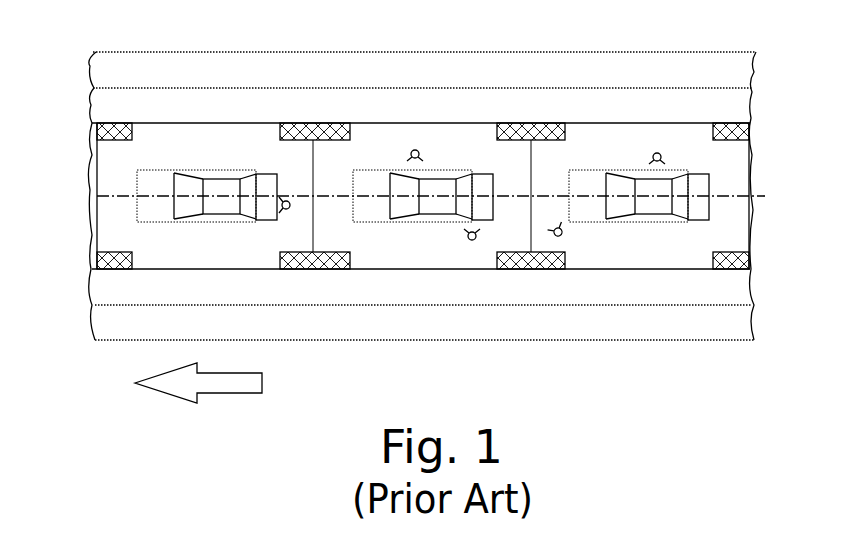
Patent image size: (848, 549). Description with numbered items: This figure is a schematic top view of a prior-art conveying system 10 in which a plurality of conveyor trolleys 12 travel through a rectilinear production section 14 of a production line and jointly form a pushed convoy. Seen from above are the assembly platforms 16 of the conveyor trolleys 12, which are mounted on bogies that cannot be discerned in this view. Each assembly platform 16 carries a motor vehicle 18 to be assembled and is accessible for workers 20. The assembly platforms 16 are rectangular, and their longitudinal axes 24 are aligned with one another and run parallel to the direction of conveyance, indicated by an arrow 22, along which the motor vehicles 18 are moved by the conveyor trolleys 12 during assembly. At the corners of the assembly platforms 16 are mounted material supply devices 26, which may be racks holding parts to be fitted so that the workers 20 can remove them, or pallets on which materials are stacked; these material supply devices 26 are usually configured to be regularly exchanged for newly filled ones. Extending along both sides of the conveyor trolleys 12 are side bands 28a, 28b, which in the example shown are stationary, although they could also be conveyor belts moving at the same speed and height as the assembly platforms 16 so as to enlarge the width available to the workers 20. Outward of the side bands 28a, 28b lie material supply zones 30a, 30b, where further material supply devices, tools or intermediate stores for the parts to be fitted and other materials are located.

The conveying system 10 is at (128, 430).
The conveyor trolley 12 is at (154, 268).
The rectilinear production section 14 is at (675, 364).
The assembly platform 16 is at (108, 229).
The motor vehicle 18 is at (135, 181).
The worker 20 is at (417, 148).
The arrow 22 is at (220, 389).
The longitudinal axis 24 is at (757, 185).
The material supply device 26 is at (95, 264).
The side band 28a is at (745, 113).
The side band 28b is at (736, 296).
The material supply zone 30a is at (716, 66).
The material supply zone 30b is at (558, 342).